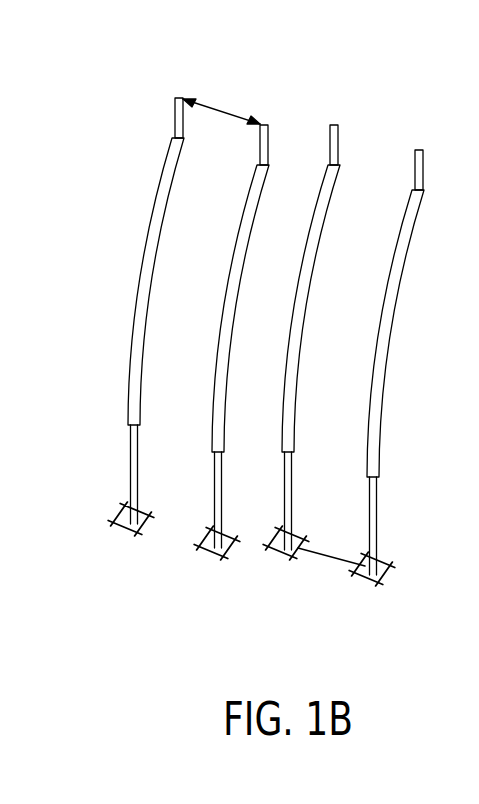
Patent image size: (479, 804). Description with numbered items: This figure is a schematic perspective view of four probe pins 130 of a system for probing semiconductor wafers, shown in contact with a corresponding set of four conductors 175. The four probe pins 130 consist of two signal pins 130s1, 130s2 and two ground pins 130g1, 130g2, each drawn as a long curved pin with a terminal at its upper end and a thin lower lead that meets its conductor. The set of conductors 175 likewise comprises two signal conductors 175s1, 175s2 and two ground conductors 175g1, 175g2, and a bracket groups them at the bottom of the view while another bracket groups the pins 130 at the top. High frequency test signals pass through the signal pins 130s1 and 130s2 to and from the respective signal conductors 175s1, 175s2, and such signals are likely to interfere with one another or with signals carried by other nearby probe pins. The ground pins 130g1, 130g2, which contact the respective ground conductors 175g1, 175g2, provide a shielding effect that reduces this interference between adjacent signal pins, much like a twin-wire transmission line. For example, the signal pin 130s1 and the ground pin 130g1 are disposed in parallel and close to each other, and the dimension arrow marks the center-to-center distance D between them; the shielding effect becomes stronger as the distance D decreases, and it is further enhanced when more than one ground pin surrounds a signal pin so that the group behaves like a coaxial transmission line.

The probe pins 130 is at (460, 82).
The ground pin 130g1 is at (178, 97).
The signal pin 130s1 is at (263, 125).
The signal pin 130s2 is at (335, 125).
The ground pin 130g2 is at (419, 150).
The center-to-center distance D is at (223, 111).
The conductors 175 is at (410, 653).
The ground conductor 175g1 is at (137, 528).
The signal conductor 175s1 is at (222, 553).
The signal conductor 175s2 is at (293, 553).
The ground conductor 175g2 is at (375, 582).